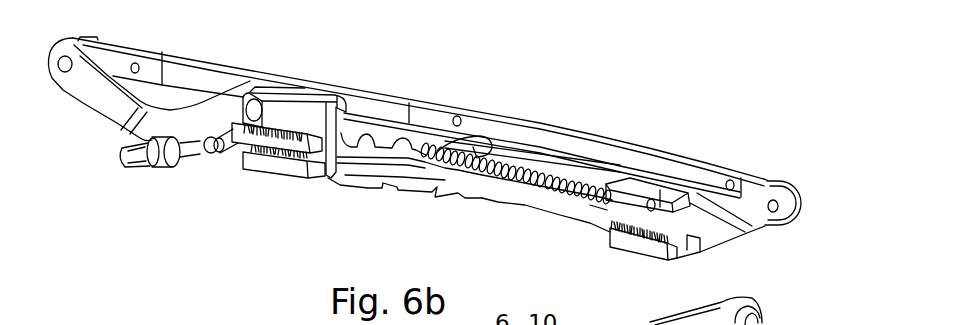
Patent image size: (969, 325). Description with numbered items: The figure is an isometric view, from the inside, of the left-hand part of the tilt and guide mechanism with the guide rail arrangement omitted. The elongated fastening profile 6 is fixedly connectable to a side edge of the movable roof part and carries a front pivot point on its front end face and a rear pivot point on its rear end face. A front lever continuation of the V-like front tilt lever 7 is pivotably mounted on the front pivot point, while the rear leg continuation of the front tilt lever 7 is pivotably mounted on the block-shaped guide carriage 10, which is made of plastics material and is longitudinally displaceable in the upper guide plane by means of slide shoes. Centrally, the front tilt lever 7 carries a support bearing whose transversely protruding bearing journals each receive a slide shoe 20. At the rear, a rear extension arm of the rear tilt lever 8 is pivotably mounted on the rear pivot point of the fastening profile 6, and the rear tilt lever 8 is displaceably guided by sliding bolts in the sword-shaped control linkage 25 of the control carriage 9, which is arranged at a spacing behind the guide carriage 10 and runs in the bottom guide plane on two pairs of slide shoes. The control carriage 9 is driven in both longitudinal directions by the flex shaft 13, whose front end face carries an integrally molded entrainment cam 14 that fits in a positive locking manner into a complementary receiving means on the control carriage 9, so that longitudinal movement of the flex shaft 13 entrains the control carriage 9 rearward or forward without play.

The fastening profile 6 is at (382, 108).
The front tilt lever 7 is at (208, 108).
The rear tilt lever 8 is at (759, 213).
The control carriage 9 is at (512, 200).
The guide carriage 10 is at (316, 95).
The flex shaft 13 is at (568, 177).
The entrainment cam 14 is at (652, 182).
The slide shoe 20 is at (213, 148).
The control linkage 25 is at (420, 168).